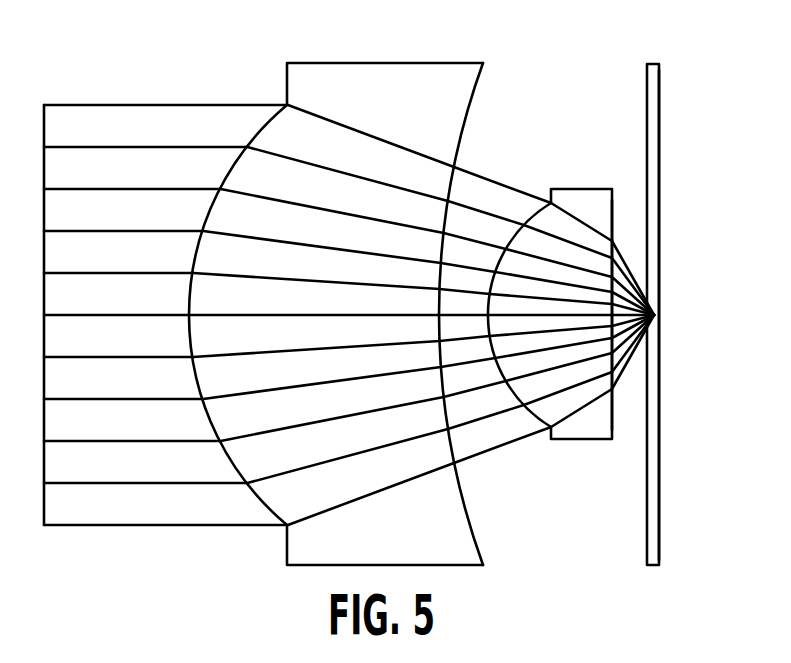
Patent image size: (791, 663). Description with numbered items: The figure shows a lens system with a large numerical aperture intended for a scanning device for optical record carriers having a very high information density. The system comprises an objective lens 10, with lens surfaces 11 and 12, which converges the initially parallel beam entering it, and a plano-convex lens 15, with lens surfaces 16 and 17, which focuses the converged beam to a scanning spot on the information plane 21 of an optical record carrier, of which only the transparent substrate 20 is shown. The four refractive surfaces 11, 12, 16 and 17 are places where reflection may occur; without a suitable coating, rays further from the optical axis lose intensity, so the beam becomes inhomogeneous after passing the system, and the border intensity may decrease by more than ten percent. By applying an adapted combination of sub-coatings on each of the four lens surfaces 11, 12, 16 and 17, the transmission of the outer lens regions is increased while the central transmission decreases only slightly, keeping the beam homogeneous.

The objective lens 10 is at (364, 291).
The lens surface 11 is at (233, 455).
The lens surface 12 is at (470, 508).
The plano-convex lens 15 is at (564, 306).
The lens surface 16 is at (513, 393).
The lens surface 17 is at (613, 412).
The transparent plate / window 20 is at (685, 347).
The information plane 21 is at (660, 523).